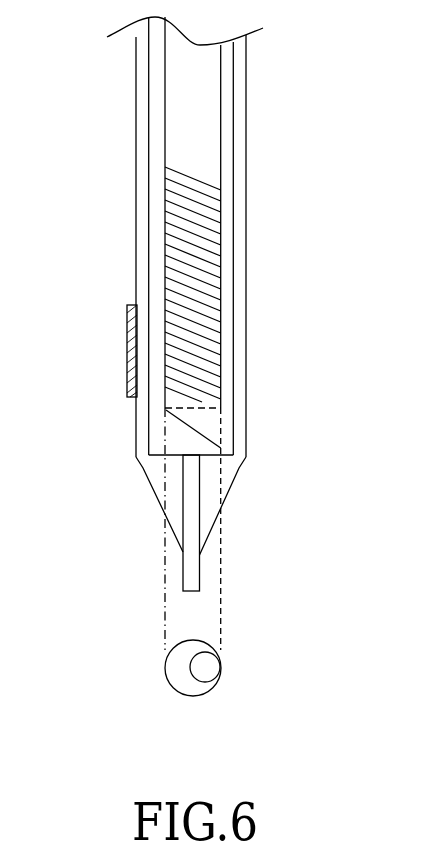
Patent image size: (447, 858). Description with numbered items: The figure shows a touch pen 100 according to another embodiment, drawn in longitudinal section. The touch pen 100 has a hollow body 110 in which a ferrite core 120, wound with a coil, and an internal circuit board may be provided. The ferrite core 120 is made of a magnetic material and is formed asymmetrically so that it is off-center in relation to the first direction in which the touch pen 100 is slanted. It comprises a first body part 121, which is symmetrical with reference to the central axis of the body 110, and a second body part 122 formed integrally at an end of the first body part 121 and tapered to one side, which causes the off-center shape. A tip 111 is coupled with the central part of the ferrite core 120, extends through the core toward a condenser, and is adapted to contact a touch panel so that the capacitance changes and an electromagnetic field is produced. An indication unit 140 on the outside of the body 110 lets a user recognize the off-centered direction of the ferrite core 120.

The touch pen 100 is at (113, 97).
The body 110 is at (246, 110).
The tip 111 is at (193, 577).
The ferrite core 120 is at (167, 212).
The first body part 121 is at (205, 157).
The second body part 122 is at (212, 425).
The indication unit 140 is at (127, 340).